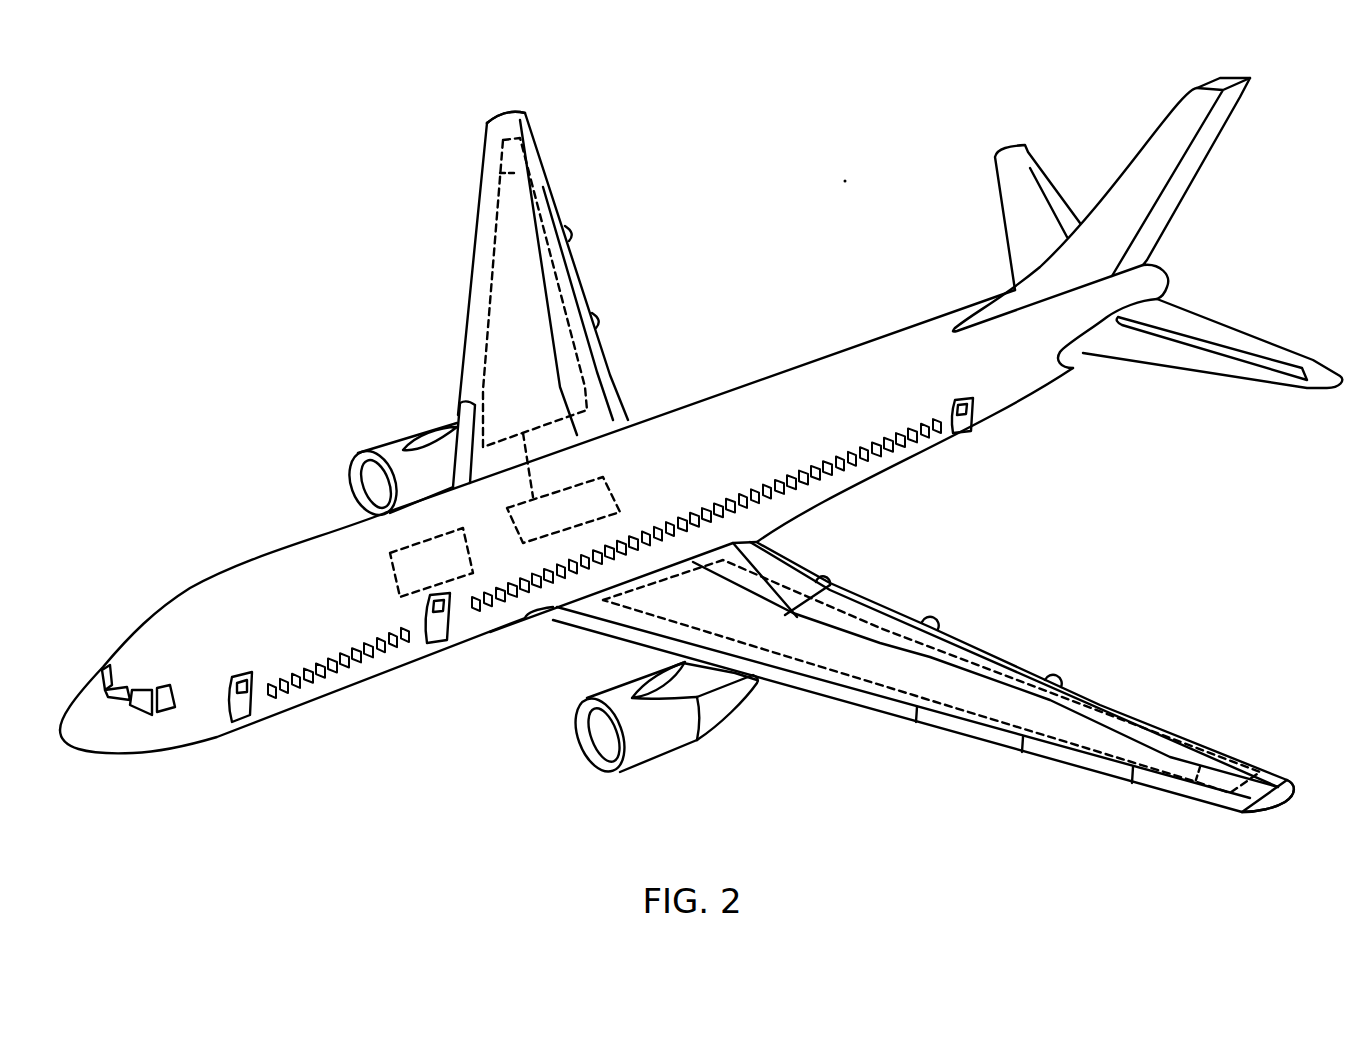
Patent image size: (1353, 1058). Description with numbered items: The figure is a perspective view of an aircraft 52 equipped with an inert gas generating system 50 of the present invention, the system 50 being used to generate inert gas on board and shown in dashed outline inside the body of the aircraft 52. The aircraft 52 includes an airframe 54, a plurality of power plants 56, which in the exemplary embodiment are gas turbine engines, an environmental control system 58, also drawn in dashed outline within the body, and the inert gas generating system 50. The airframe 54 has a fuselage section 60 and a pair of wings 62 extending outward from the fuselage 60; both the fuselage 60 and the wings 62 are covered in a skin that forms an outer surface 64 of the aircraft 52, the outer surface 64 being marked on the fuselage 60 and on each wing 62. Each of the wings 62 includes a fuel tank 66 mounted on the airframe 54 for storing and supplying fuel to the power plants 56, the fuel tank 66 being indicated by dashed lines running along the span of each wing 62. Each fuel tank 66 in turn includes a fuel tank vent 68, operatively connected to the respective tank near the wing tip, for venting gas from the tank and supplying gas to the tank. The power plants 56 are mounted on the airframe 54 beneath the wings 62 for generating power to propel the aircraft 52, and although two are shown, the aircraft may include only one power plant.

The inert gas generating system 50 is at (617, 496).
The aircraft 52 is at (735, 170).
The airframe 54 is at (797, 380).
The power plants 56 is at (383, 443).
The environmental control system 58 is at (390, 584).
The fuselage section 60 is at (1030, 408).
The wings 62 is at (537, 140).
The outer surface 64 is at (698, 479).
The fuel tank 66 is at (560, 275).
The fuel tank vent 68 is at (497, 156).